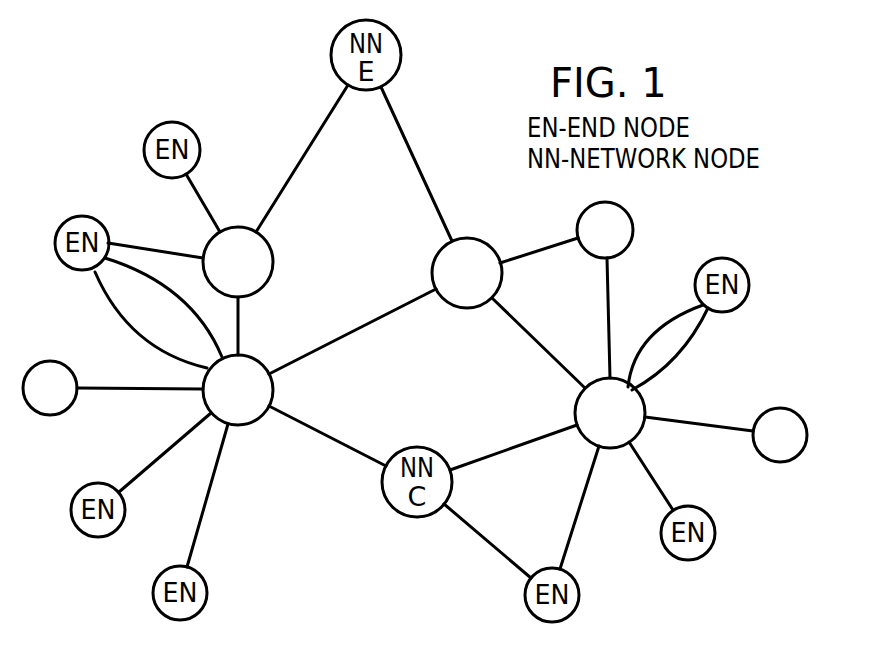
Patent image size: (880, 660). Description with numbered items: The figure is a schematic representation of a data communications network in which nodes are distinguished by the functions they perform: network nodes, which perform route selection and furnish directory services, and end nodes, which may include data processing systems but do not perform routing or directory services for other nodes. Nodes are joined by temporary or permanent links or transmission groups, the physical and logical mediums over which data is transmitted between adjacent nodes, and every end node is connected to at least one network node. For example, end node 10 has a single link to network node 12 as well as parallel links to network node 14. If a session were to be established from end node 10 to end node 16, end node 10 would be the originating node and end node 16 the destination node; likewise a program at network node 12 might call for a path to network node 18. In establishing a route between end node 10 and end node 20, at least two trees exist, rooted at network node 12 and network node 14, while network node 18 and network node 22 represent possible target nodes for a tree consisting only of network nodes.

The end node 10 is at (53, 362).
The network node 12 is at (263, 240).
The network node 14 is at (252, 427).
The end node 16 is at (782, 408).
The network node 18 is at (580, 398).
The end node 20 is at (632, 222).
The network node 22 is at (482, 240).